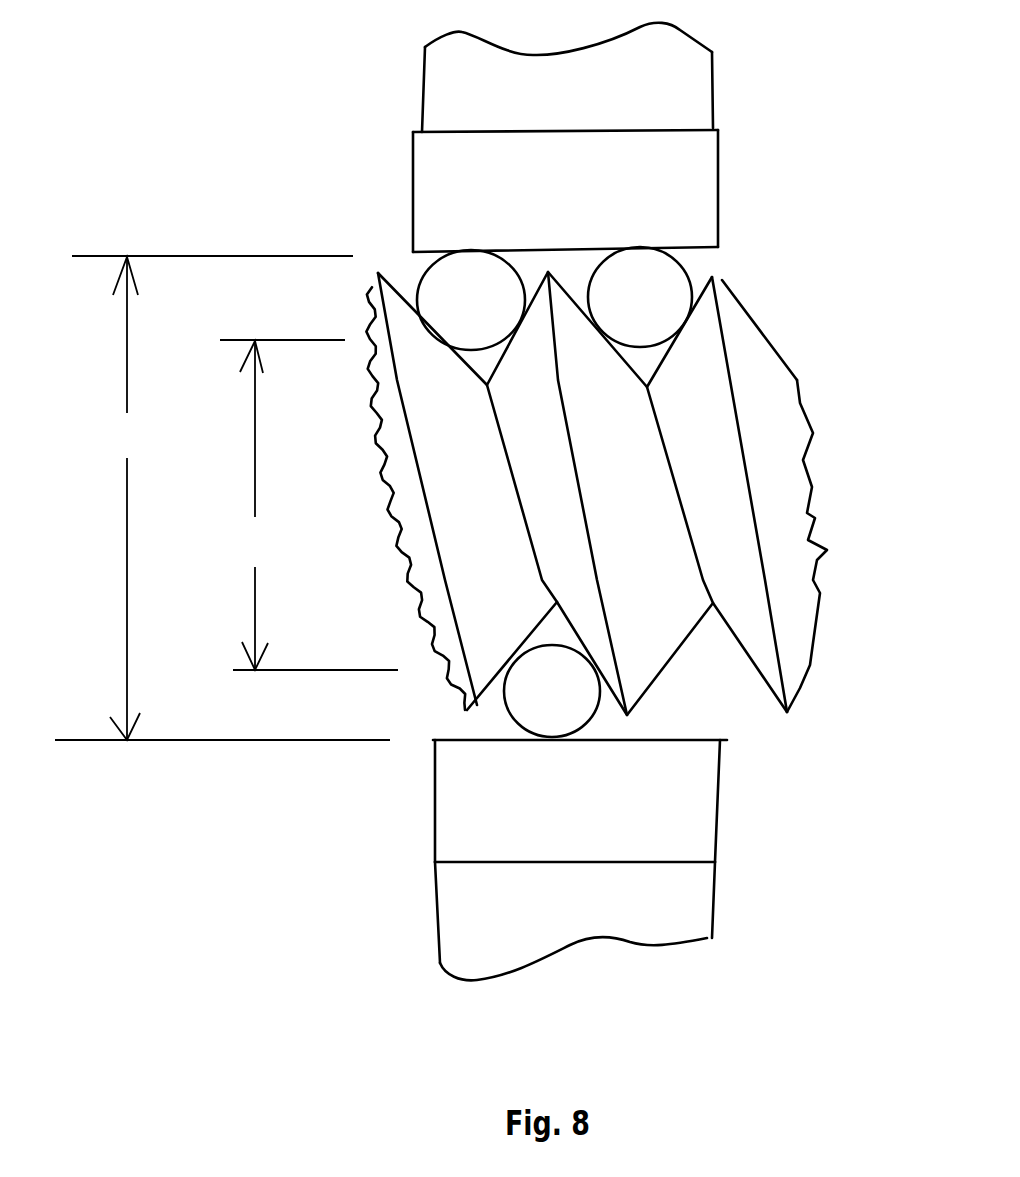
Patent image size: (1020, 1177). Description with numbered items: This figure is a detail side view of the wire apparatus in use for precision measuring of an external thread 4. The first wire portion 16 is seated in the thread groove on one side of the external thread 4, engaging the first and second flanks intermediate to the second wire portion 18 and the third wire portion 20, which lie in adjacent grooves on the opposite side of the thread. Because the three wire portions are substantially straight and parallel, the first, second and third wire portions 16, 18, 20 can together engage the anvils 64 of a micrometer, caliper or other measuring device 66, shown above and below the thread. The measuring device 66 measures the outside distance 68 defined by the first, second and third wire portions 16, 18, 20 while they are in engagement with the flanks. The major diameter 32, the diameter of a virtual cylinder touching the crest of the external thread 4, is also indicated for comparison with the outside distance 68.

The external thread 4 is at (815, 517).
The first wire portion 16 is at (518, 723).
The second wire portion 18 is at (423, 278).
The third wire portion 20 is at (688, 275).
The major diameter 32 is at (309, 505).
The anvils 64 is at (712, 163).
The measuring device 66 is at (713, 900).
The outside distance 68 is at (222, 498).